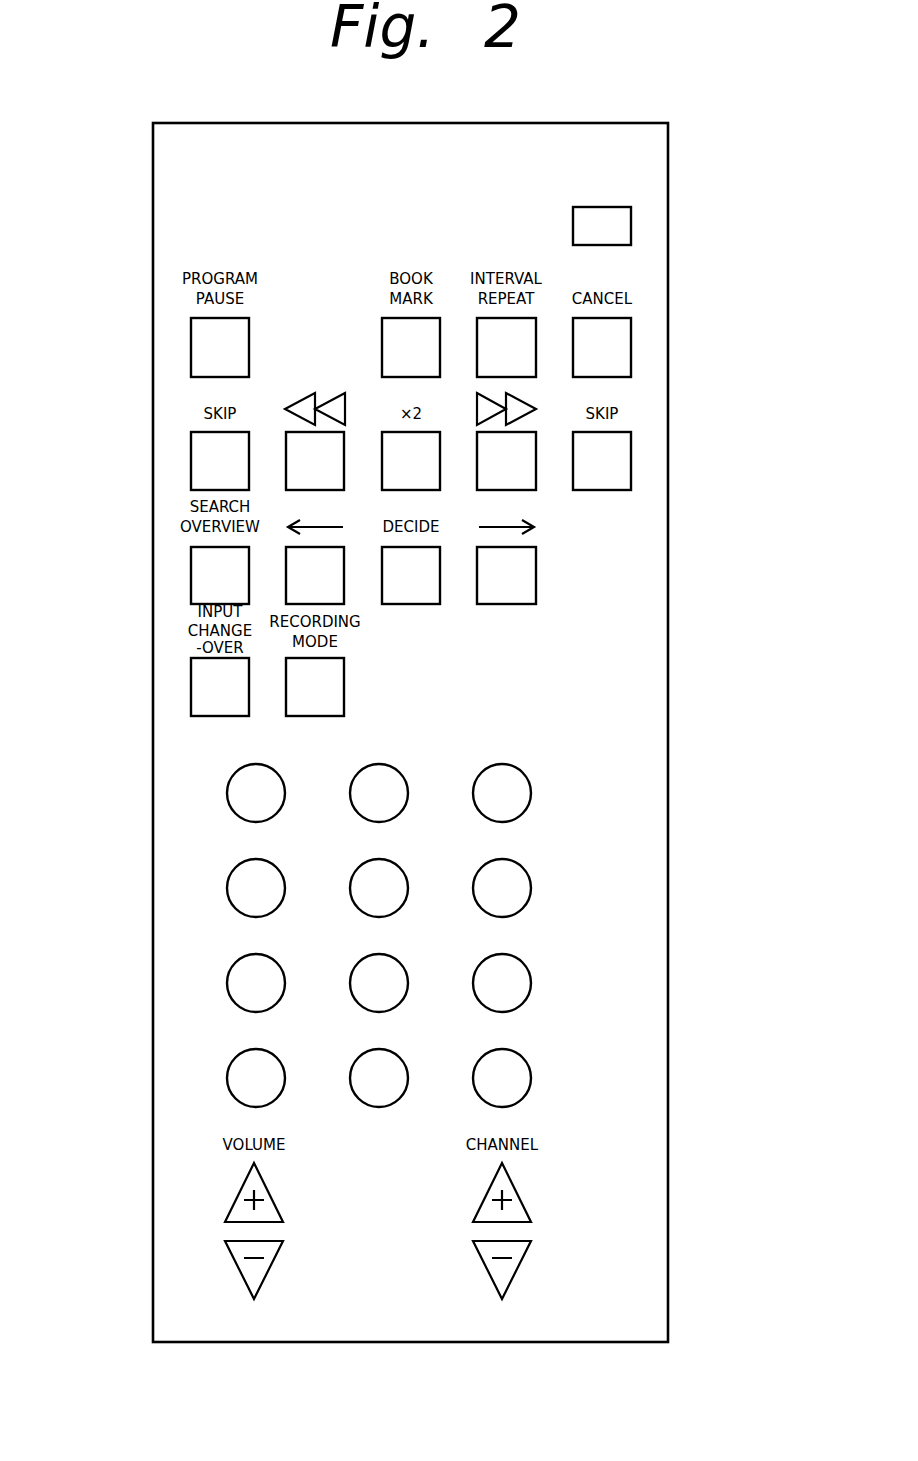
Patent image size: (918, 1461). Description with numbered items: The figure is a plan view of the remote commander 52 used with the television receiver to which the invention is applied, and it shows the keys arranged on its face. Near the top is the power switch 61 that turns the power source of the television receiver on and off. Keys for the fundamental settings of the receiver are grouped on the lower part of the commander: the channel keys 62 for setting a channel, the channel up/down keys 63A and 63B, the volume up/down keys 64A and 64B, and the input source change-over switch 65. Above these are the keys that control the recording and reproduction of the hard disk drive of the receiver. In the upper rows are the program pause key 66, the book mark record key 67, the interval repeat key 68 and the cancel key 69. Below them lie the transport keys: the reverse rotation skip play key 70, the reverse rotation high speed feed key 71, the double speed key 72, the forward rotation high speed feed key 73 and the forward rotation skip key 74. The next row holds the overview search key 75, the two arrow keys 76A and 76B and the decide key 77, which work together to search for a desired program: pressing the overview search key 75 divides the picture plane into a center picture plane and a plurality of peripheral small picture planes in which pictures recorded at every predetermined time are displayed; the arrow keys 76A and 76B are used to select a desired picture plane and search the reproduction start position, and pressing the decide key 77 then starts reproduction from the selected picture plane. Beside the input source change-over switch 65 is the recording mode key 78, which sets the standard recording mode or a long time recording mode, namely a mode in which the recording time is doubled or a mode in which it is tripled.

The remote commander 52 is at (686, 182).
The power switch 61 is at (631, 226).
The channel keys 62 is at (227, 795).
The channel up key 63A is at (517, 1192).
The channel down key 63B is at (520, 1262).
The volume up key 64A is at (240, 1190).
The volume down key 64B is at (237, 1263).
The input source change-over switch 65 is at (191, 688).
The program pause key 66 is at (191, 347).
The book mark record key 67 is at (382, 348).
The interval repeat key 68 is at (536, 355).
The cancel key 69 is at (631, 347).
The reverse rotation skip play key 70 is at (191, 462).
The reverse rotation high speed feed key 71 is at (313, 432).
The double speed key 72 is at (413, 490).
The forward rotation high speed feed key 73 is at (508, 490).
The forward rotation skip key 74 is at (631, 462).
The overview search key 75 is at (191, 576).
The arrow key 76A is at (344, 577).
The arrow key 76B is at (536, 578).
The decide key 77 is at (413, 604).
The recording mode key 78 is at (318, 716).